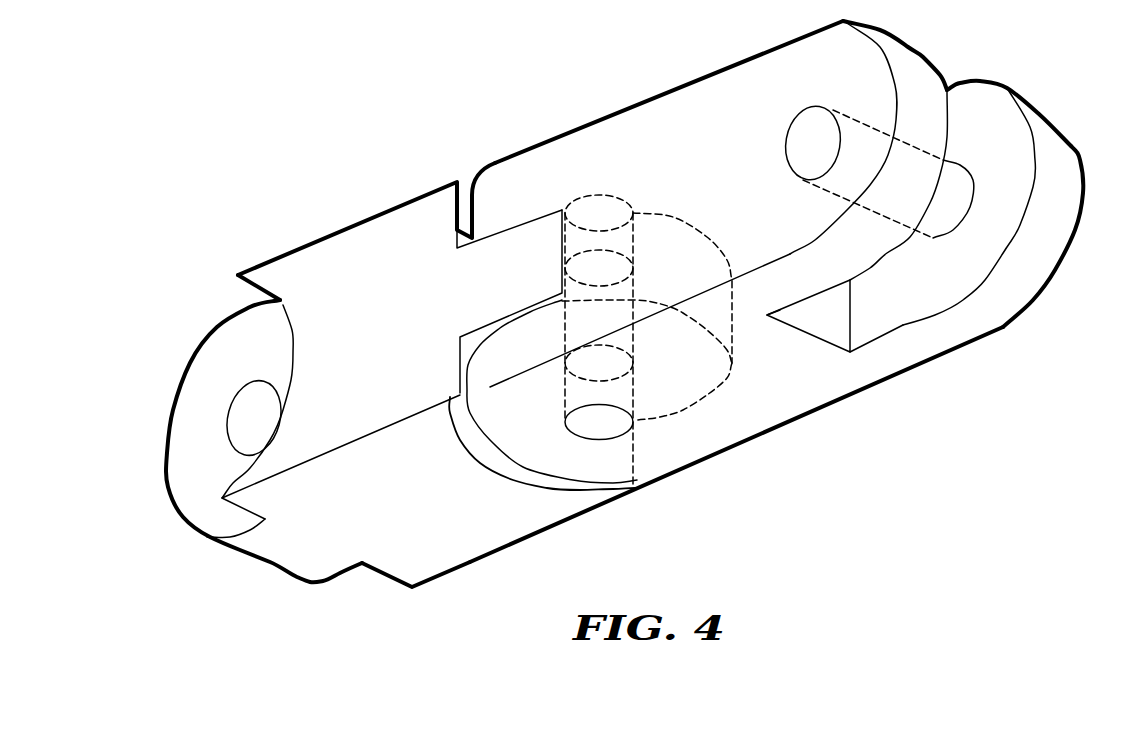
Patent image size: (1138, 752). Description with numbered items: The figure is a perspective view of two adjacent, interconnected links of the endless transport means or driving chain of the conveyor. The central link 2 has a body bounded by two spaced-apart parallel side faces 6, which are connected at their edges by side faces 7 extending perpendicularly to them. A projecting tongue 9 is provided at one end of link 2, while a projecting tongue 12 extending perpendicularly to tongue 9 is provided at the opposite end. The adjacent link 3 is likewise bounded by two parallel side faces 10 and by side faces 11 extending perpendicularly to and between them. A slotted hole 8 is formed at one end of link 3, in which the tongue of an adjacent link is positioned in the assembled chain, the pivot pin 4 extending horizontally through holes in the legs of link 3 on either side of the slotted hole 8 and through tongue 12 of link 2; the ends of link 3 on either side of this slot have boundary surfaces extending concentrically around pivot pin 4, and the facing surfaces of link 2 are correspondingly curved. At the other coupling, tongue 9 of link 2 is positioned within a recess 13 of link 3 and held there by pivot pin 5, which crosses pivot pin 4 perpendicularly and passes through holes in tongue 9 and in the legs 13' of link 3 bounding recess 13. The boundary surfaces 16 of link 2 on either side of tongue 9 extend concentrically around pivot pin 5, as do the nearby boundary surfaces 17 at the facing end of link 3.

The link 2 is at (347, 640).
The link 3 is at (849, 431).
The pivot pin 4 is at (602, 427).
The pivot pin 5 is at (953, 202).
The side faces 6 is at (427, 572).
The side faces 7 is at (378, 232).
The slotted hole 8 is at (562, 208).
The projecting tongue 9 is at (185, 448).
The side faces 10 is at (685, 457).
The side faces 11 is at (692, 100).
The projecting tongue 12 is at (508, 250).
The recess 13 is at (844, 346).
The legs 13' is at (906, 337).
The boundary surfaces 16 is at (290, 317).
The boundary surfaces 17 is at (920, 60).